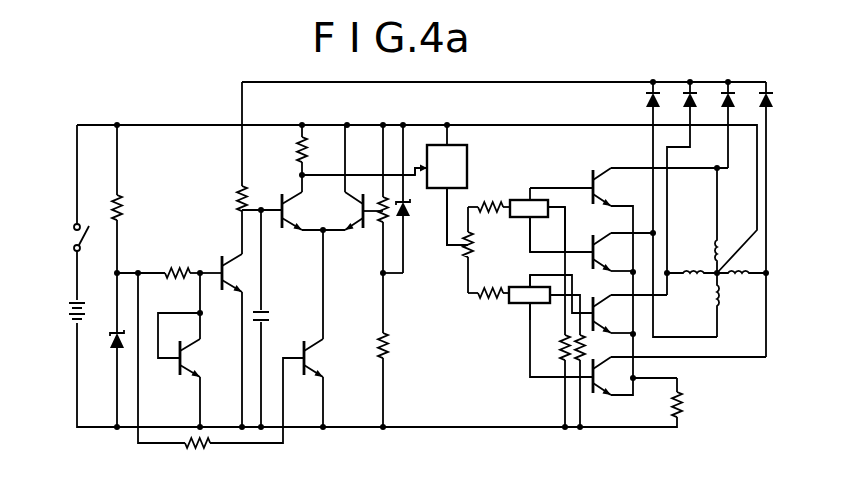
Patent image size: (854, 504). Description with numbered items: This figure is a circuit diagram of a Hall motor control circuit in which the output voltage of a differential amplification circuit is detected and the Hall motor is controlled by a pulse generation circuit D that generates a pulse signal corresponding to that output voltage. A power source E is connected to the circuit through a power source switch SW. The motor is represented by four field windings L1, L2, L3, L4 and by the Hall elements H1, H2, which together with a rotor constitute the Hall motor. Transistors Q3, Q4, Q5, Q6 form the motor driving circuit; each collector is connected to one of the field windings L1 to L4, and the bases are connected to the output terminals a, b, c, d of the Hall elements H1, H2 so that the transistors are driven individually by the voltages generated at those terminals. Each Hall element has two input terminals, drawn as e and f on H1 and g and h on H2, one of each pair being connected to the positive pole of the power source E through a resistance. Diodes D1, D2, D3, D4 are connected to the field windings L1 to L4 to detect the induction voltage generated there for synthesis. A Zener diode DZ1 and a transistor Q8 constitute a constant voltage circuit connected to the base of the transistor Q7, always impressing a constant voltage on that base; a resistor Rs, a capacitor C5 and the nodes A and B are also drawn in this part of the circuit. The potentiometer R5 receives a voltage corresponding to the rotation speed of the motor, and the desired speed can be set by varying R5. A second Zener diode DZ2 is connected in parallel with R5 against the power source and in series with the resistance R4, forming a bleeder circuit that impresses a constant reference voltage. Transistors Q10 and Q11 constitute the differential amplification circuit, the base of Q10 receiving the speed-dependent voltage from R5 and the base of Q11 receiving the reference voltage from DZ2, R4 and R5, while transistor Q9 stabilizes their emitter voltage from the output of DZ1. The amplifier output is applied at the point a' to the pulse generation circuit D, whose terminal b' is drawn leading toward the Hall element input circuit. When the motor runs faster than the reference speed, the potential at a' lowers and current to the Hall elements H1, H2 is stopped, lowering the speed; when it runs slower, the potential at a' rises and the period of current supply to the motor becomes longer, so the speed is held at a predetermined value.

The power source switch SW is at (66, 240).
The power source E is at (70, 316).
The zener diode DZ1 is at (113, 342).
The transistor Q7 is at (225, 288).
The transistor Q8 is at (185, 358).
The sensing resistor Rs is at (238, 207).
The circuit node A is at (261, 207).
The circuit node B is at (308, 189).
The transistor Q10 is at (285, 224).
The transistor Q11 is at (361, 224).
The capacitor C5 is at (276, 317).
The transistor Q9 is at (310, 358).
The potentiometer R5 is at (387, 224).
The resistance R4 is at (397, 347).
The Zener diode DZ2 is at (408, 216).
The point a' is at (417, 157).
The pulse generation circuit D is at (457, 170).
The output terminal of detector circuit b' is at (457, 216).
The terminal of Hall element H1 e is at (489, 199).
The Hall element H1 is at (522, 199).
The output terminal a is at (555, 198).
The input terminal f is at (568, 224).
The output terminal b is at (545, 234).
The terminal of Hall element H2 g is at (488, 284).
The output terminal c is at (528, 287).
The input terminal h is at (565, 290).
The output terminal d is at (528, 304).
The Hall element H2 is at (510, 302).
The transistor Q3 is at (597, 178).
The transistor Q4 is at (603, 220).
The transistor Q5 is at (597, 305).
The transistor Q6 is at (597, 370).
The diode D1 is at (723, 100).
The diode D2 is at (685, 100).
The diode D3 is at (648, 100).
The diode D4 is at (760, 100).
The field winding L1 is at (720, 250).
The field winding L2 is at (695, 268).
The field winding L3 is at (714, 295).
The field winding L4 is at (741, 278).